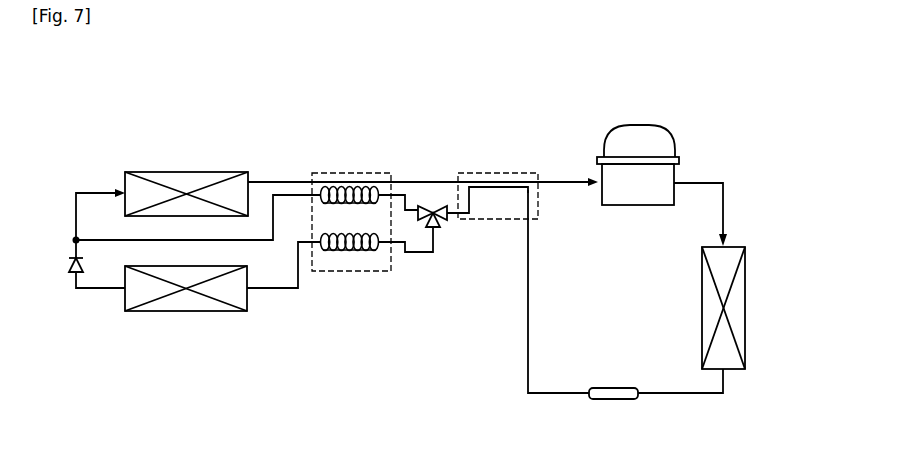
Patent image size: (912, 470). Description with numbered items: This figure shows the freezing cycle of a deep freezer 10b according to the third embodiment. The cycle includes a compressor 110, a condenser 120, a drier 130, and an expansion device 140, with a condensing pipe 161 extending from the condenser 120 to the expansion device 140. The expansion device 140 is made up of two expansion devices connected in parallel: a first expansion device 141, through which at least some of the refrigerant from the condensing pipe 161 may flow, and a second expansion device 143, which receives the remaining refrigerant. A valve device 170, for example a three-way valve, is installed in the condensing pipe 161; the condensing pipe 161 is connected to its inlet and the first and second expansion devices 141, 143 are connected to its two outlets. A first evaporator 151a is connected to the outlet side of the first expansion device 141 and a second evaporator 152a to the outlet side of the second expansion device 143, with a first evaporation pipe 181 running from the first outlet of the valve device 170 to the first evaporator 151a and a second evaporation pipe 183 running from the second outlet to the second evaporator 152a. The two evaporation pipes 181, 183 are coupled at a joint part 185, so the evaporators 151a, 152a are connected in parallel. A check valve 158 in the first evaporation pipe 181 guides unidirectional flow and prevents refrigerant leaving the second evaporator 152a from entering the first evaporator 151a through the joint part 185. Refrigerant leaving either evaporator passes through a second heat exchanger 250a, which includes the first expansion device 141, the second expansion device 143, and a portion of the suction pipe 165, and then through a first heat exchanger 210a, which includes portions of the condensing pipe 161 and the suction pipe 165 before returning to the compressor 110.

The deep freezer 10b is at (485, 92).
The compressor 110 is at (665, 138).
The condenser 120 is at (746, 311).
The drier 130 is at (616, 400).
The expansion device 140 is at (377, 226).
The first expansion device 141 is at (345, 252).
The second expansion device 143 is at (332, 186).
The first evaporator 151a is at (192, 311).
The second evaporator 152a is at (186, 172).
The check valve 158 is at (75, 289).
The condensing pipe 161 is at (527, 319).
The suction pipe 165 is at (569, 180).
The valve device 170 is at (448, 216).
The first evaporation pipe 181 is at (275, 289).
The second evaporation pipe 183 is at (98, 240).
The joint part 185 is at (74, 240).
The first heat exchanger 210a is at (506, 173).
The second heat exchanger 250a is at (368, 173).